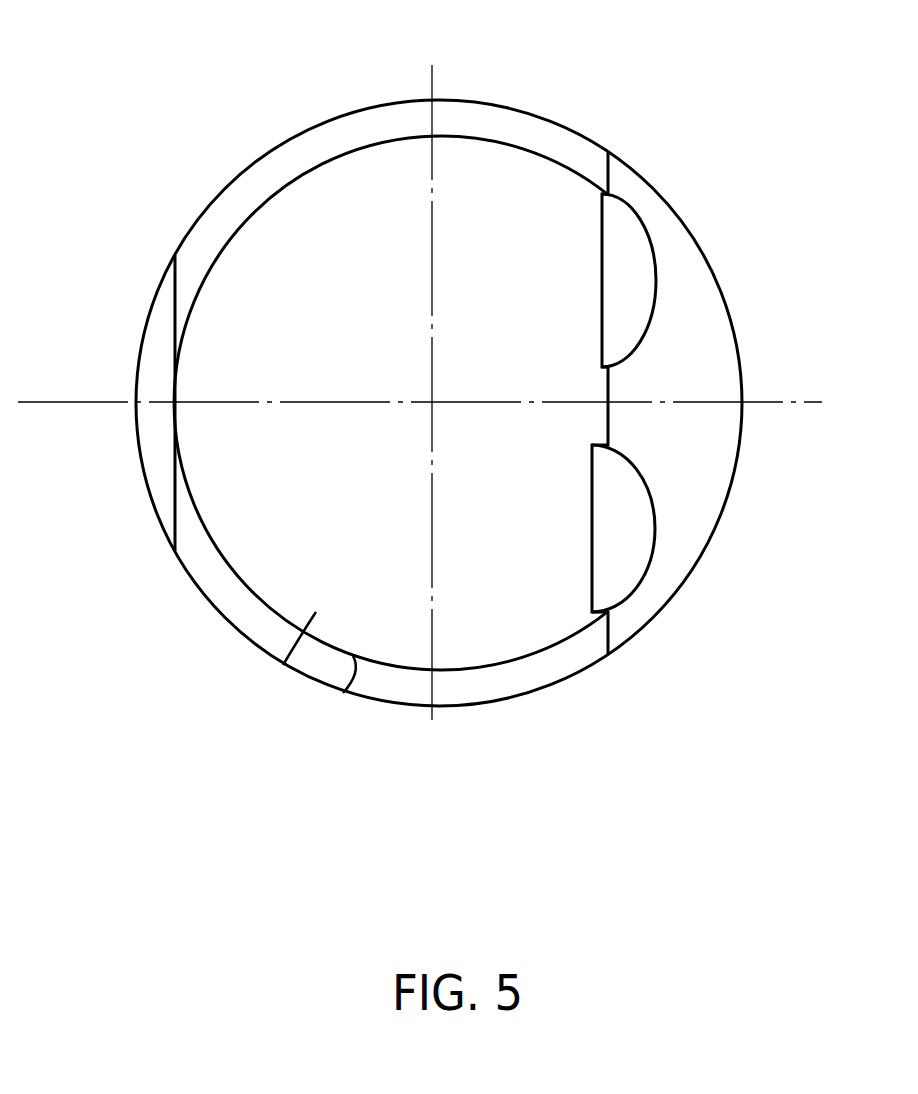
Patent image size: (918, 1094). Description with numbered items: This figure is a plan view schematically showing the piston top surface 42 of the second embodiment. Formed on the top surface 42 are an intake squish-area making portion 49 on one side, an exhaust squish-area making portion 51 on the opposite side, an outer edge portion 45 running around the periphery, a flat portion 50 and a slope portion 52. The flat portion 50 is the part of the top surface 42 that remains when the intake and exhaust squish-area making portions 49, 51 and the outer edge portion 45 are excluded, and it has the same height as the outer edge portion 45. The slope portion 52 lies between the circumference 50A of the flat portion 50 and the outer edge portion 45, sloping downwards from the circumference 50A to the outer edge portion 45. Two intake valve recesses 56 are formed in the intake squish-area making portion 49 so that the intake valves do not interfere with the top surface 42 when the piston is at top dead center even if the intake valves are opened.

The piston top surface 42 is at (184, 112).
The outer edge portion 45 is at (197, 221).
The intake squish-area making portion 49 is at (707, 495).
The flat portion 50 is at (287, 665).
The circumference of the flat portion 50A is at (345, 693).
The exhaust squish-area making portion 51 is at (153, 372).
The slope portion 52 is at (323, 132).
The intake valve recesses 56 is at (620, 346).